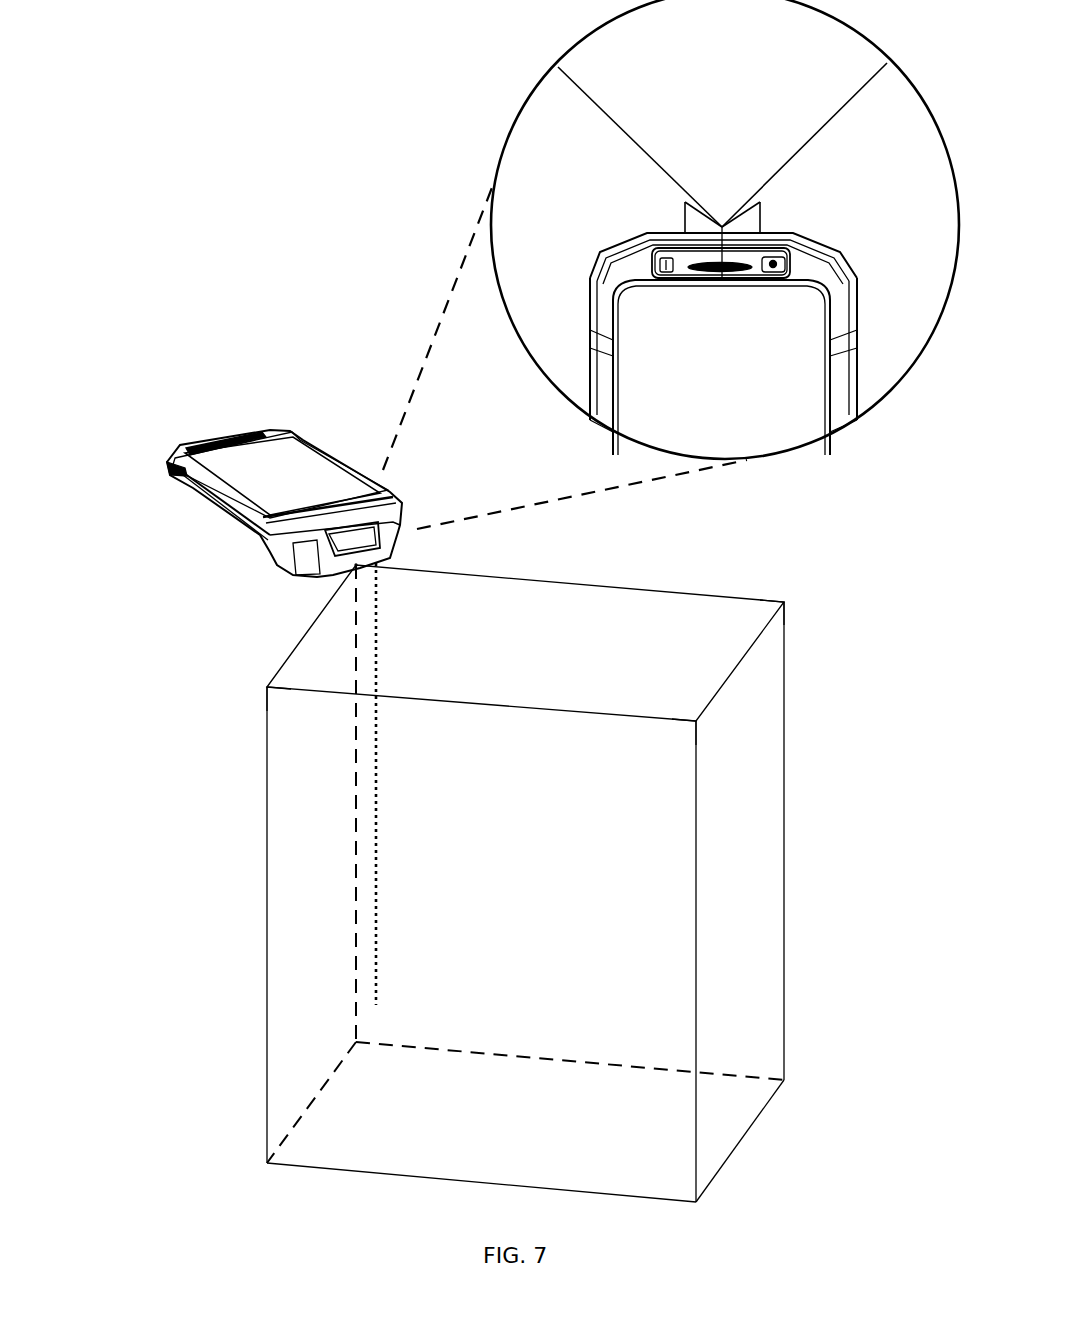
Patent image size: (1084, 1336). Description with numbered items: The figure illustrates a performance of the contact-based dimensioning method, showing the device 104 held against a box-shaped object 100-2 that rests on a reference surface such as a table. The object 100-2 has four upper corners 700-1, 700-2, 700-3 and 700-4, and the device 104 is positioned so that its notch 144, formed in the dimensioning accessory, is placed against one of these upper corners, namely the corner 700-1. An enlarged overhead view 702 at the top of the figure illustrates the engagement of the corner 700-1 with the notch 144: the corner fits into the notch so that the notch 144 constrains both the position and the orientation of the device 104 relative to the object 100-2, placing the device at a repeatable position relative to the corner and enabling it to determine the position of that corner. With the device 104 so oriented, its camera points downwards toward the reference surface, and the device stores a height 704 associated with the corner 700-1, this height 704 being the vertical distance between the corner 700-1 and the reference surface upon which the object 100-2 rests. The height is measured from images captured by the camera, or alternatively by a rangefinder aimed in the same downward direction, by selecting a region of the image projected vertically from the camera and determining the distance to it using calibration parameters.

The overhead view 702 is at (515, 104).
The device 104 is at (175, 497).
The notch 144 is at (330, 583).
The upper corner 700-1 is at (352, 565).
The upper corner 700-2 is at (784, 602).
The upper corner 700-3 is at (697, 722).
The upper corner 700-4 is at (267, 687).
The object 100-2 is at (762, 688).
The height 704 is at (377, 825).